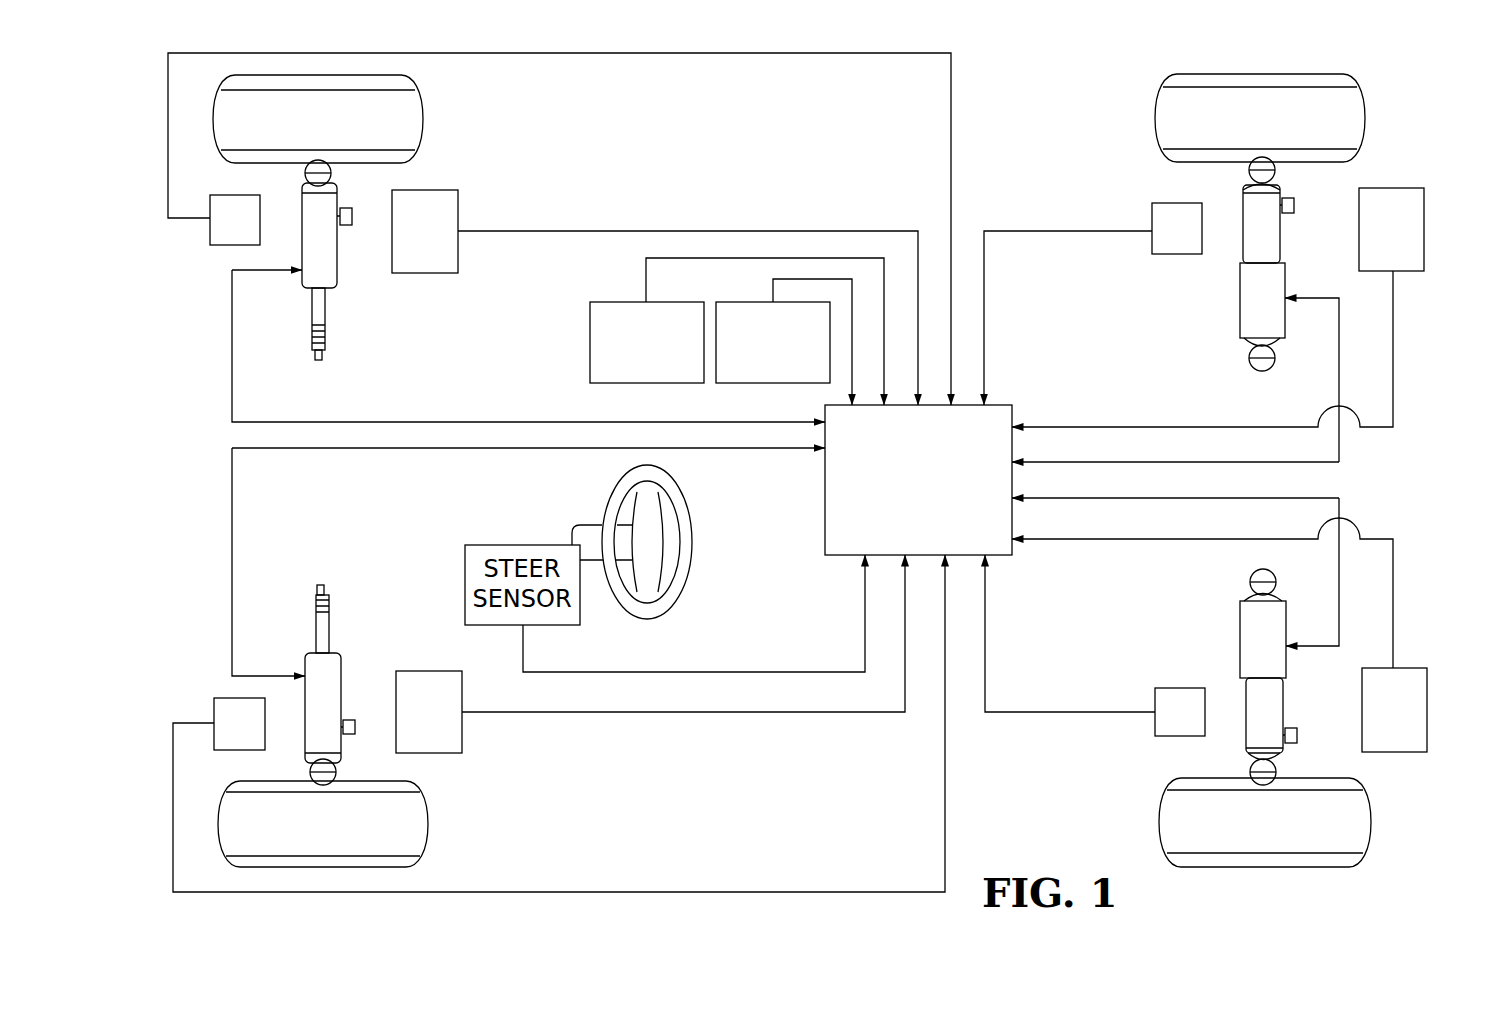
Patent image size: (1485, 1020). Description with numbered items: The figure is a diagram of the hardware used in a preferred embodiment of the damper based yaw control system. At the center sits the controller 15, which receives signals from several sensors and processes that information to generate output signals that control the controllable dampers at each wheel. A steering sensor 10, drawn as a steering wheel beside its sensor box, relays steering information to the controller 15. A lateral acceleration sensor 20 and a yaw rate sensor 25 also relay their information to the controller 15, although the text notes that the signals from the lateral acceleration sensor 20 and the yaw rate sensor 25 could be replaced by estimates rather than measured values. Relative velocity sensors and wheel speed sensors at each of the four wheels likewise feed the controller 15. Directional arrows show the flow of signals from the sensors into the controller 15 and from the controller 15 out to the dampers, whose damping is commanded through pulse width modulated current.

The steering sensor 10 is at (672, 600).
The controller 15 is at (1005, 556).
The lateral acceleration sensor 20 is at (738, 383).
The yaw rate sensor 25 is at (612, 383).